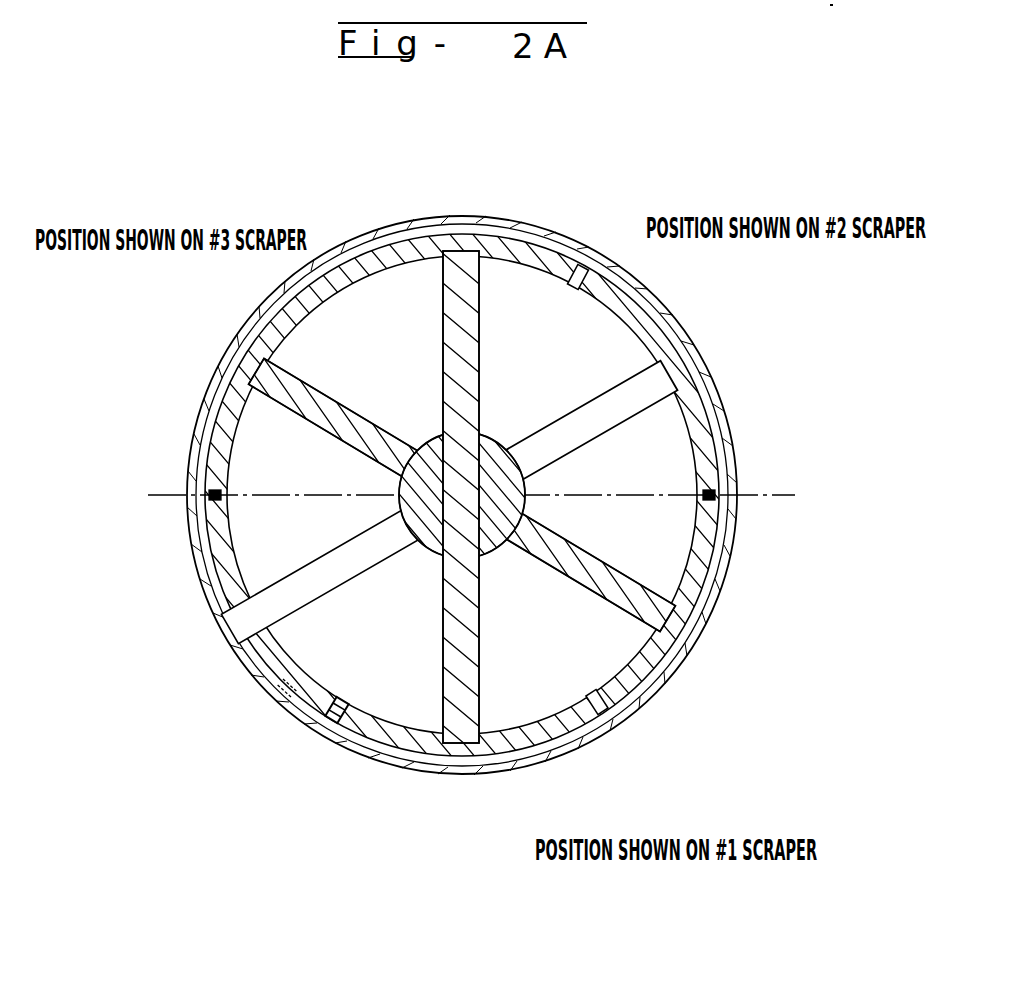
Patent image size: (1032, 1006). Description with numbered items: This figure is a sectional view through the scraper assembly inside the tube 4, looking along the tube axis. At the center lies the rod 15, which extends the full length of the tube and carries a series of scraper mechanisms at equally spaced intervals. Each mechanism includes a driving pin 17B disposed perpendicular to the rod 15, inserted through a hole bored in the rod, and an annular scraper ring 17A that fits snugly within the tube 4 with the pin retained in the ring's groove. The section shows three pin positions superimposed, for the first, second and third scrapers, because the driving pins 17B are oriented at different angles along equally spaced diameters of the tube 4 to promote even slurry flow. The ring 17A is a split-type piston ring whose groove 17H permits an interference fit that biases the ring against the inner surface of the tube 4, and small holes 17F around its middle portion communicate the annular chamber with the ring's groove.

The tube 4 is at (687, 655).
The rod 15 is at (400, 487).
The annular scraper ring 17A is at (240, 583).
The driving pin 17B is at (484, 537).
The small holes 17F is at (328, 718).
The groove 17H is at (283, 690).